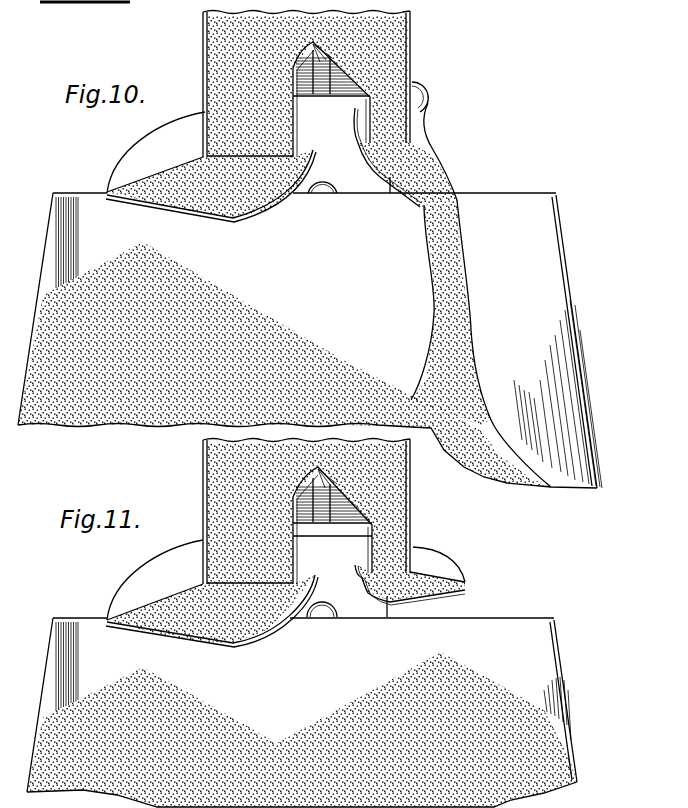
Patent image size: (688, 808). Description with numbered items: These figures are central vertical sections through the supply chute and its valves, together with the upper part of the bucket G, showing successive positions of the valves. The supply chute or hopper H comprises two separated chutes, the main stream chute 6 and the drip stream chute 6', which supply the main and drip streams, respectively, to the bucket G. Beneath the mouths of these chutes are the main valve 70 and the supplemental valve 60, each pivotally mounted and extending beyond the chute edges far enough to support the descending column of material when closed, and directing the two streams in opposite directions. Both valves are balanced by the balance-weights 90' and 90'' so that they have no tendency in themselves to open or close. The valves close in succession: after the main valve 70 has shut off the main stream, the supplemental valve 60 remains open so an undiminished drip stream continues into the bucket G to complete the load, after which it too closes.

In FIG. 10, the supply chute or hopper H is at (412, 45).
In FIG. 11, the supply chute or hopper H is at (413, 498).
In FIG. 10, the bucket G is at (310, 340).
In FIG. 11, the bucket G is at (302, 712).
In FIG. 10, the balance-weight 90' is at (189, 84).
In FIG. 11, the balance-weight 90' is at (196, 512).
In FIG. 10, the balance-weight 90'' is at (441, 77).
In FIG. 11, the balance-weight 90'' is at (437, 506).
In FIG. 10, the main stream chute 6 is at (210, 157).
In FIG. 11, the main stream chute 6 is at (211, 582).
In FIG. 10, the drip stream chute 6' is at (410, 149).
In FIG. 11, the drip stream chute 6' is at (411, 569).
In FIG. 10, the supplemental valve 60 is at (414, 147).
In FIG. 11, the supplemental valve 60 is at (432, 598).
In FIG. 10, the main valve 70 is at (222, 220).
In FIG. 11, the main valve 70 is at (200, 643).